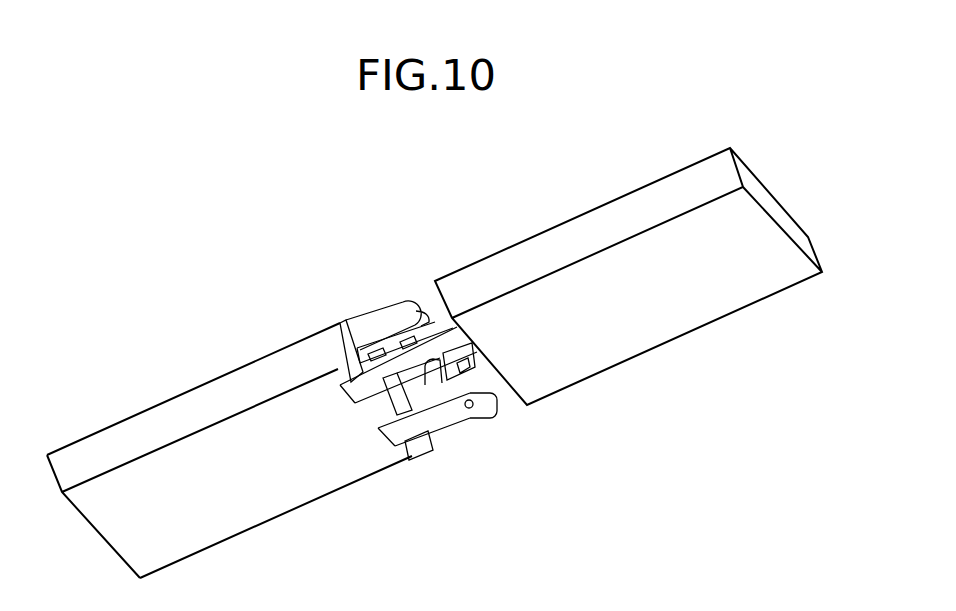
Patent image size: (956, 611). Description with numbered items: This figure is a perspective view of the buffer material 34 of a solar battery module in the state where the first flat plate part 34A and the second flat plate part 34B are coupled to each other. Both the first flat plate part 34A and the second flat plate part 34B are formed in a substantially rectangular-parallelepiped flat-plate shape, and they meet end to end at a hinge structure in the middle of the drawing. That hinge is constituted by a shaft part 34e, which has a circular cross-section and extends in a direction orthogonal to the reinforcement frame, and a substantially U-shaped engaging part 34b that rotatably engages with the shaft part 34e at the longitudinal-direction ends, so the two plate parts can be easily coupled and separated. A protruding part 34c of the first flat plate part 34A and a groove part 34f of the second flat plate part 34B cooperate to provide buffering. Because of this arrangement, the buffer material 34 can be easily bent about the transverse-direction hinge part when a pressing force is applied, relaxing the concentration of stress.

The buffer material 34 is at (351, 221).
The first flat plate part 34A is at (635, 318).
The second flat plate part 34B is at (297, 472).
The engaging part 34b is at (431, 380).
The protruding part 34c is at (350, 380).
The shaft part 34e is at (443, 365).
The groove part 34f is at (407, 437).